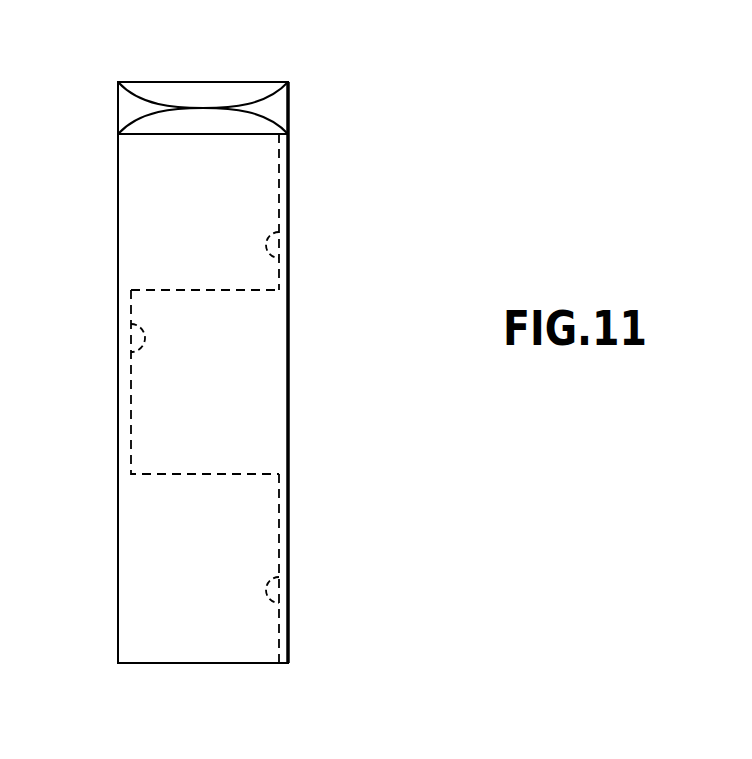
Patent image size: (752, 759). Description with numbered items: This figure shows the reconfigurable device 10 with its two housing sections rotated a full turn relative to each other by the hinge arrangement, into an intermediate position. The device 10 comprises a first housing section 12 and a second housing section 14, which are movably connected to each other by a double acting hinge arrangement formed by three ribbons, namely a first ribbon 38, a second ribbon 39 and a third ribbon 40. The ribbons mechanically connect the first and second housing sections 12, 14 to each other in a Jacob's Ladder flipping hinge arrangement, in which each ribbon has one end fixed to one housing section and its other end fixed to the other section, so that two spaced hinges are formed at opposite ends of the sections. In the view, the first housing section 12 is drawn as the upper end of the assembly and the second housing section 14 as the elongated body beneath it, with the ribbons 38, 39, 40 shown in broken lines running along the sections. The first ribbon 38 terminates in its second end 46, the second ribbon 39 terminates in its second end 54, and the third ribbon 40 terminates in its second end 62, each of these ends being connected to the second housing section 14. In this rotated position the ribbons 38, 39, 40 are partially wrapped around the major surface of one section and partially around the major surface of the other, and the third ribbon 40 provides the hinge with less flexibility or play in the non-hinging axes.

The device 10 is at (231, 351).
The first housing section 12 is at (213, 95).
The second housing section 14 is at (270, 381).
The first ribbon 38 is at (118, 386).
The second ribbon 39 is at (290, 198).
The third ribbon 40 is at (290, 544).
The second end of the first ribbon 46 is at (128, 327).
The second end of the second ribbon 54 is at (290, 270).
The second end of the third ribbon 62 is at (290, 614).